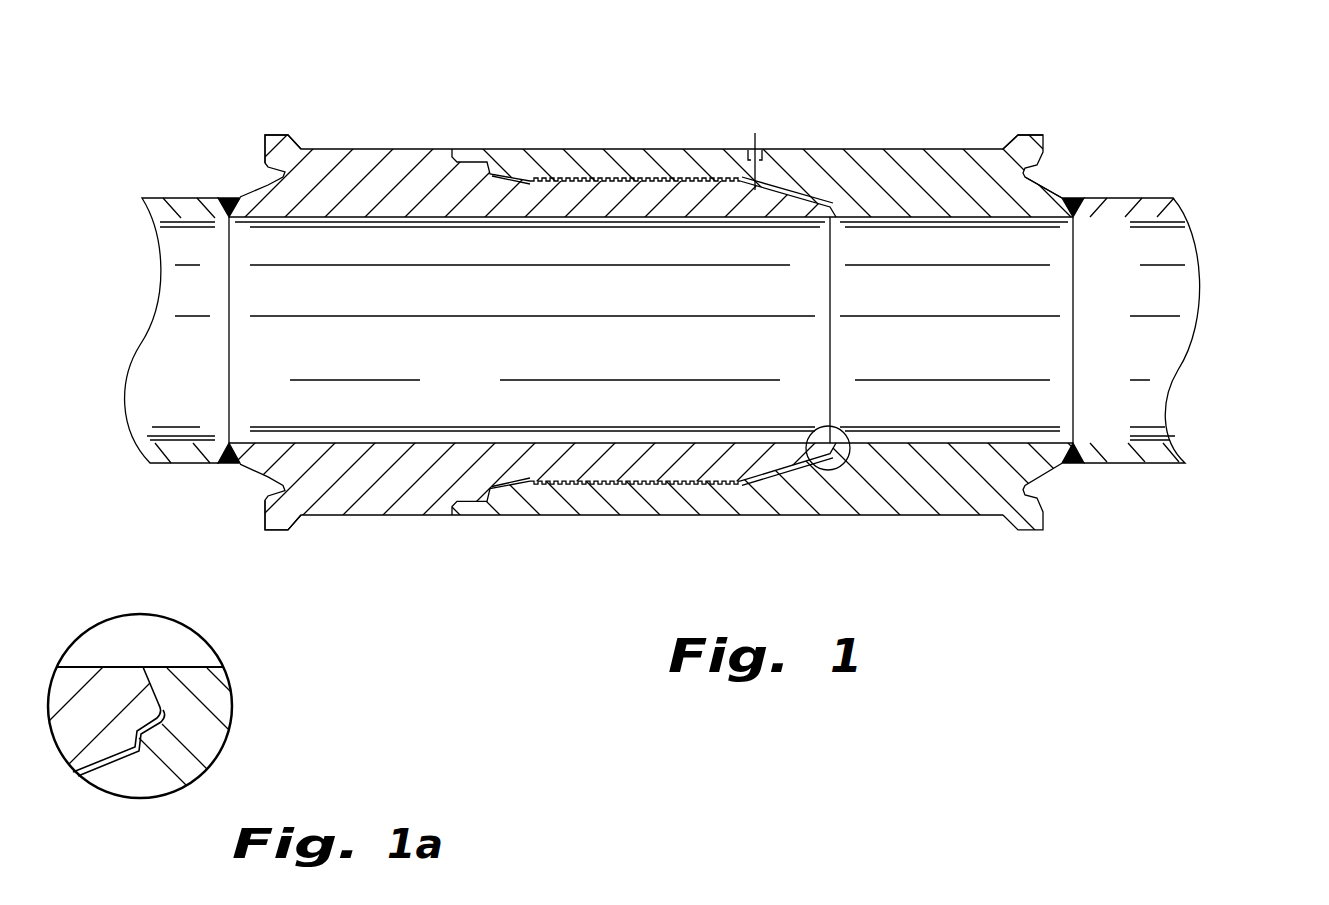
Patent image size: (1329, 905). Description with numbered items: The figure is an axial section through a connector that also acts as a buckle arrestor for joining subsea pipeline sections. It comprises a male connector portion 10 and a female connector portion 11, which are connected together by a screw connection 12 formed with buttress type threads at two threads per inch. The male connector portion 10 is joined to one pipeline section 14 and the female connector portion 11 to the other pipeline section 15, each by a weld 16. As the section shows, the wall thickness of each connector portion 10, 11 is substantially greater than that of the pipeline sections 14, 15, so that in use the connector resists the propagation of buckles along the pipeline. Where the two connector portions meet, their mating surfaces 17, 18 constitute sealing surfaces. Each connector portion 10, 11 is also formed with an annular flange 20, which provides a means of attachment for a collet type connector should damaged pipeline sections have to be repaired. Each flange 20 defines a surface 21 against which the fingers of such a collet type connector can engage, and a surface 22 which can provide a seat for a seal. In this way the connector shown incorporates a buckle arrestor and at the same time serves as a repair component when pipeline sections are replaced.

The male connector portion 10 is at (392, 160).
The female connector portion 11 is at (903, 150).
The screw connection 12 is at (703, 150).
The pipeline section 14 is at (177, 203).
The pipeline section 15 is at (1155, 203).
The weld 16 is at (235, 193).
The mating surface 17 is at (485, 163).
The mating surface 18 is at (838, 218).
The annular flange 20 is at (278, 134).
The surface 21 is at (1008, 146).
The surface 22 is at (1078, 194).